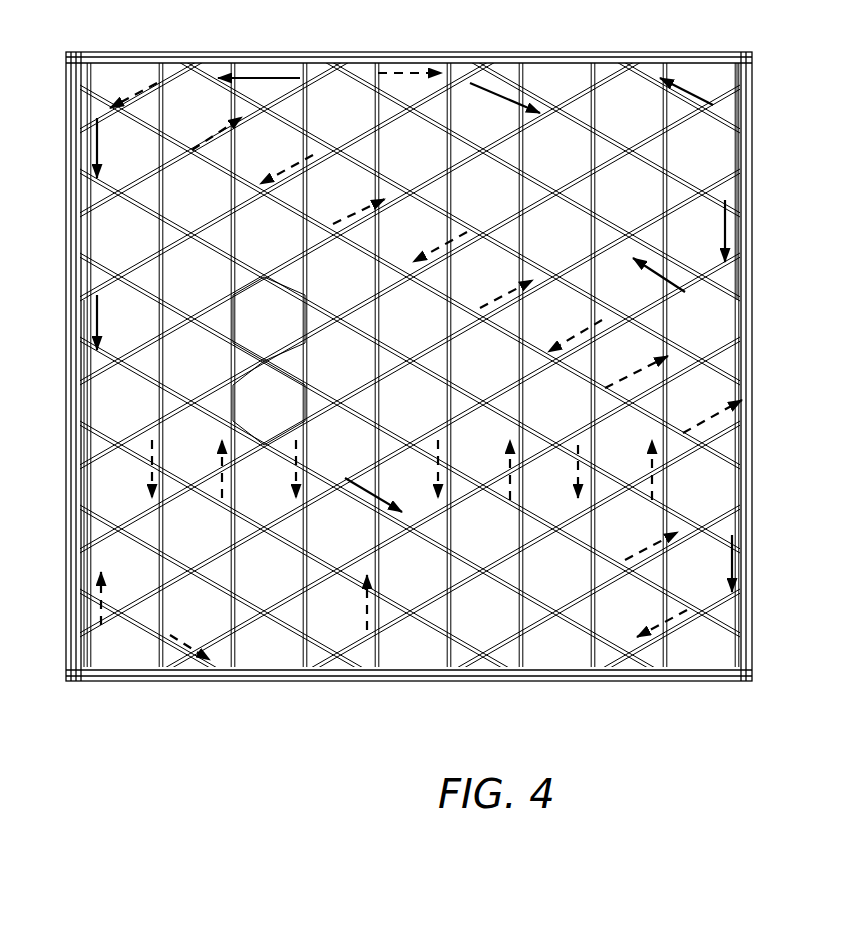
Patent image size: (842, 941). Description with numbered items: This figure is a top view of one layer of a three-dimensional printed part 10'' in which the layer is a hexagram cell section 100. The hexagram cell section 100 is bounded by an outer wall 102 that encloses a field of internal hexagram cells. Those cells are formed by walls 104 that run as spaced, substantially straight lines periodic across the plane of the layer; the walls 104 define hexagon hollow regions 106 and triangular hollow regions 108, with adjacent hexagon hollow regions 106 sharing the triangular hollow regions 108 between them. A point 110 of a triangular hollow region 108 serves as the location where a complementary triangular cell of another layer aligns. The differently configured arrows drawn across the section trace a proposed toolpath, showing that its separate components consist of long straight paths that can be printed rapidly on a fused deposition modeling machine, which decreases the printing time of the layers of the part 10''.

The hexagram cell section 100 is at (388, 470).
The outer wall 102 is at (82, 676).
The walls 104 is at (733, 128).
The hexagon hollow regions 106 is at (283, 329).
The triangular hollow regions 108 is at (320, 407).
The point of the triangular hollow region 110 is at (160, 510).
The 3D part 10'' is at (388, 470).